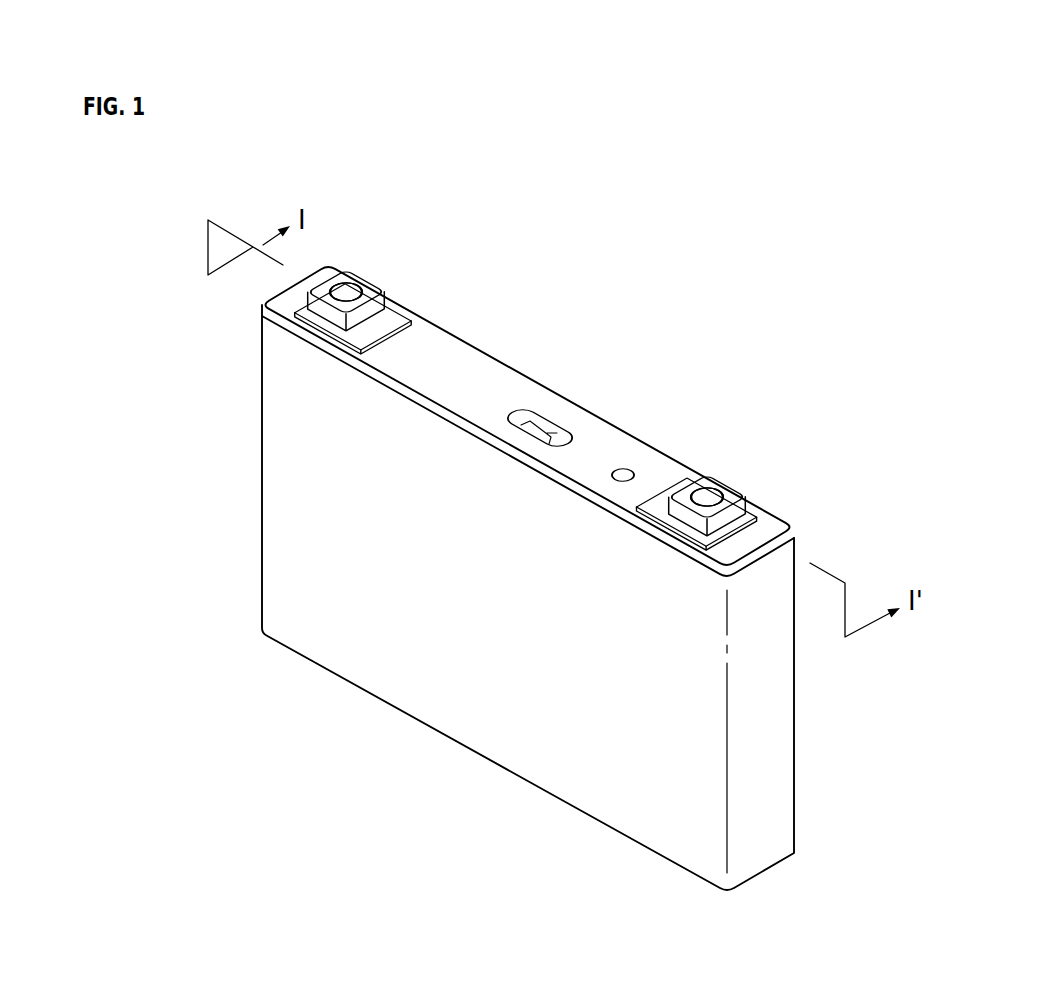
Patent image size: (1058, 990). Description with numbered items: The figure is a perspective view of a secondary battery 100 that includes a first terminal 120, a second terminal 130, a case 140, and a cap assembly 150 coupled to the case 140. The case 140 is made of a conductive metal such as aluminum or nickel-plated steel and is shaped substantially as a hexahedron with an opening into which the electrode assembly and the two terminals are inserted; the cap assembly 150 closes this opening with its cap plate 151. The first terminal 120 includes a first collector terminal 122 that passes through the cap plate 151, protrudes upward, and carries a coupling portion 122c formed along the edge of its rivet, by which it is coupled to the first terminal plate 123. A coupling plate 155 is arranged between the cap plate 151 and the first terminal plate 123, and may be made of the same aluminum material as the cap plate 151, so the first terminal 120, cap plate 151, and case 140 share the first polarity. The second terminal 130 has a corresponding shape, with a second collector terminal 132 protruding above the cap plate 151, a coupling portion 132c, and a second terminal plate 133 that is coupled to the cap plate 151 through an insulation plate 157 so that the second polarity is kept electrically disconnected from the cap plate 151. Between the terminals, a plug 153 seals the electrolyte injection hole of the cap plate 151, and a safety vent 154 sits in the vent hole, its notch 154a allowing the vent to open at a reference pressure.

The secondary battery 100 is at (826, 272).
The first terminal 120 is at (340, 245).
The first collector terminal 122 is at (349, 262).
The coupling portion 122c is at (275, 320).
The first terminal plate 123 is at (375, 276).
The second terminal 130 is at (697, 465).
The second collector terminal 132 is at (713, 478).
The coupling portion 132c is at (720, 495).
The second terminal plate 133 is at (758, 486).
The case 140 is at (473, 735).
The cap assembly 150 is at (502, 378).
The cap plate 151 is at (450, 352).
The plug 153 is at (622, 473).
The safety vent 154 is at (540, 413).
The notch 154a is at (550, 440).
The coupling plate 155 is at (392, 320).
The insulation plate 157 is at (745, 525).